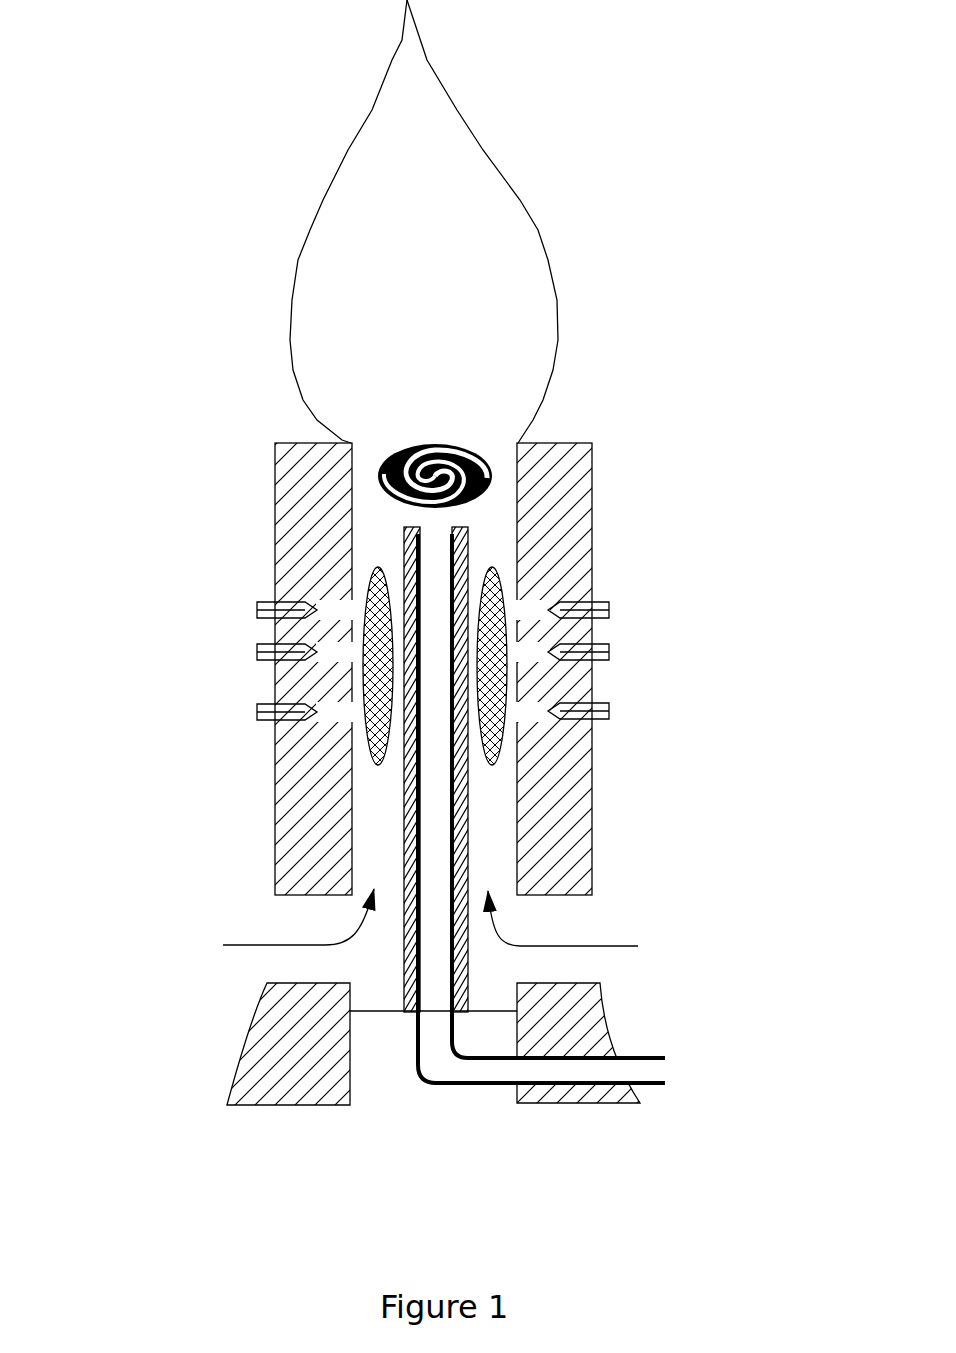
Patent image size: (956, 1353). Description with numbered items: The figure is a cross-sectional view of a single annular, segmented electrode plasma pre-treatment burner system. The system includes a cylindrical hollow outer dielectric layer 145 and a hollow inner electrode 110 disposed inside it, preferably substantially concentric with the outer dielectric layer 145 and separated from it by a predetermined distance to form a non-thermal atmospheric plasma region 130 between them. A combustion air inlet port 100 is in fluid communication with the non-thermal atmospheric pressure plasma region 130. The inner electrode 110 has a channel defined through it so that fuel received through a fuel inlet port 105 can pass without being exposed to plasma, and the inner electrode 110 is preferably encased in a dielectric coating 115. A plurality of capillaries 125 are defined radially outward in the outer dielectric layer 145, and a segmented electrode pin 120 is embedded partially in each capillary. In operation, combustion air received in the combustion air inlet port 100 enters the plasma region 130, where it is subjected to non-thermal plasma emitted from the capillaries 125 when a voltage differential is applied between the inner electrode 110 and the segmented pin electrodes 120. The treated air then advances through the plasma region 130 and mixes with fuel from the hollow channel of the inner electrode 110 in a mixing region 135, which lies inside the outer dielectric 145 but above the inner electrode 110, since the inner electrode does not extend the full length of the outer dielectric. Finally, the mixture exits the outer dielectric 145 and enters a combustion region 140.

The combustion air inlet port 100 is at (438, 925).
The fuel inlet port 105 is at (671, 1069).
The inner electrode 110 is at (446, 956).
The dielectric coating 115 is at (401, 924).
The segmented electrode pin 120 is at (246, 615).
The capillaries 125 is at (336, 601).
The non-thermal atmospheric plasma region 130 is at (399, 576).
The mixing region 135 is at (376, 467).
The combustion region 140 is at (597, 242).
The outer dielectric layer 145 is at (595, 820).